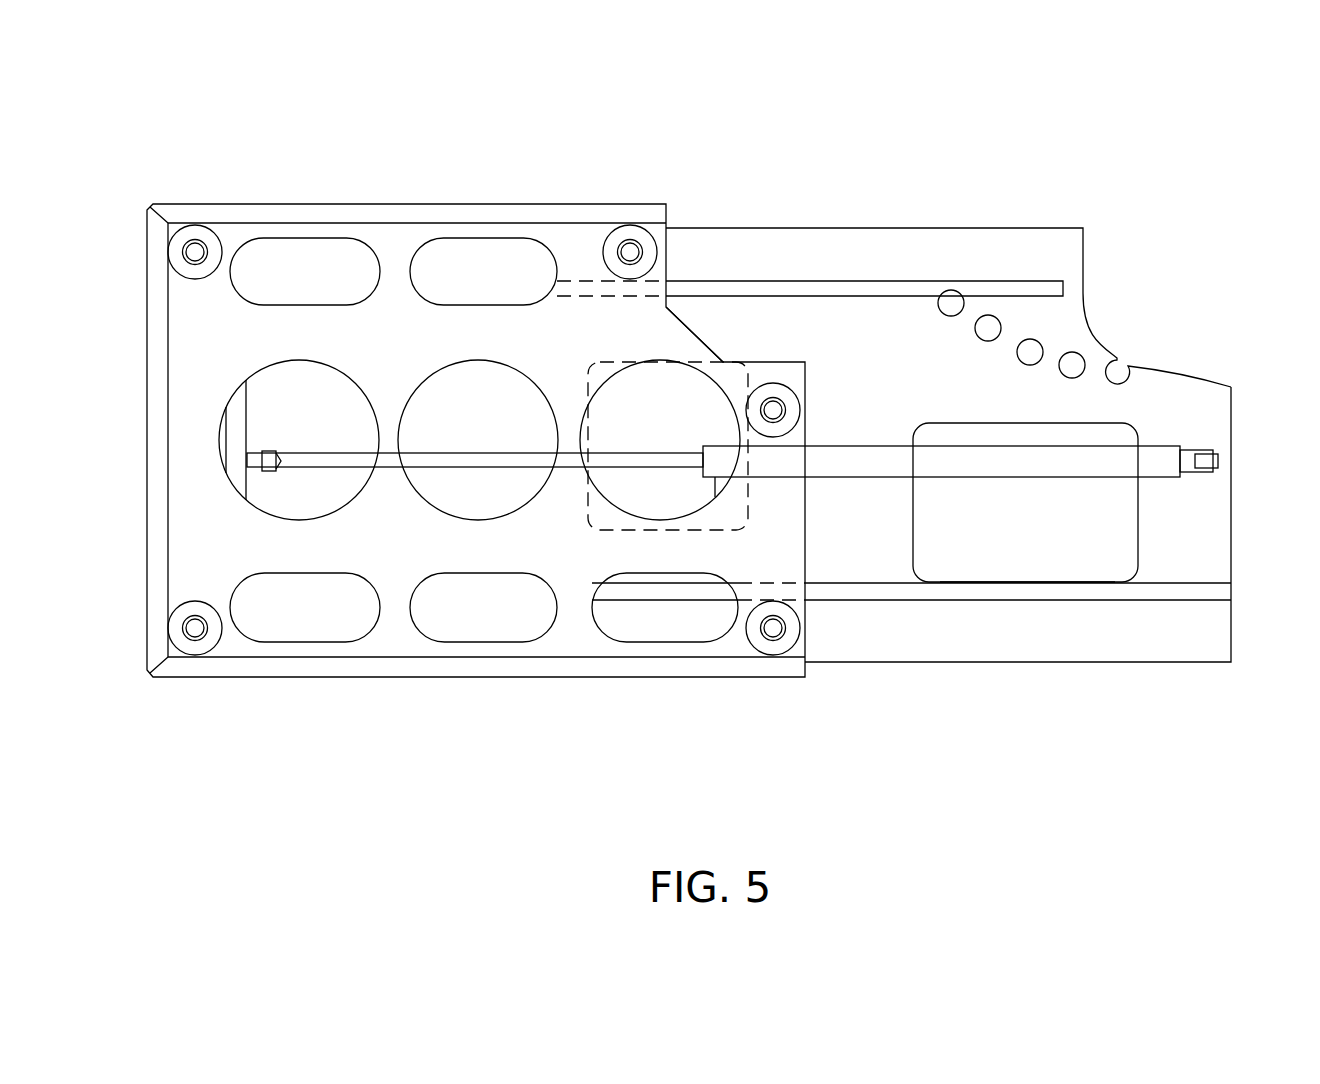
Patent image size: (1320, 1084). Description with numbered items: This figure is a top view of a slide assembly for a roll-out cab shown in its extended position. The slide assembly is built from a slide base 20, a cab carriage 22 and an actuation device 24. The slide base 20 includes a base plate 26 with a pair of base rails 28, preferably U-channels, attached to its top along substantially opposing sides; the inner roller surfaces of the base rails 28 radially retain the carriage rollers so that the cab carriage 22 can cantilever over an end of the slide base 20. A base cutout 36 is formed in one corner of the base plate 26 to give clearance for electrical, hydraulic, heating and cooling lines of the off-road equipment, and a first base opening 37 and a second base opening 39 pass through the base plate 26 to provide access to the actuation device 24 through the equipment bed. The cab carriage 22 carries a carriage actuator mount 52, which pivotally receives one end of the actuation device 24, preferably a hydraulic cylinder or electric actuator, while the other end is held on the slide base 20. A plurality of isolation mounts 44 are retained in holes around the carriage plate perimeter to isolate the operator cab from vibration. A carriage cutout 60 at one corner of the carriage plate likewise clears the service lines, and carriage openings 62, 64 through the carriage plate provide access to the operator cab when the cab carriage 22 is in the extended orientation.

The slide base 20 is at (831, 168).
The cab carriage 22 is at (546, 174).
The actuation device 24 is at (1110, 440).
The base plate 26 is at (988, 600).
The base rails 28 is at (960, 228).
The base cutout 36 is at (1137, 287).
The first base opening 37 is at (1037, 582).
The second base opening 39 is at (750, 518).
The isolation mounts 44 is at (190, 232).
The carriage actuator mount 52 is at (265, 385).
The carriage cutout 60 is at (687, 325).
The carriage openings 62 is at (421, 245).
The carriage openings 64 is at (437, 507).